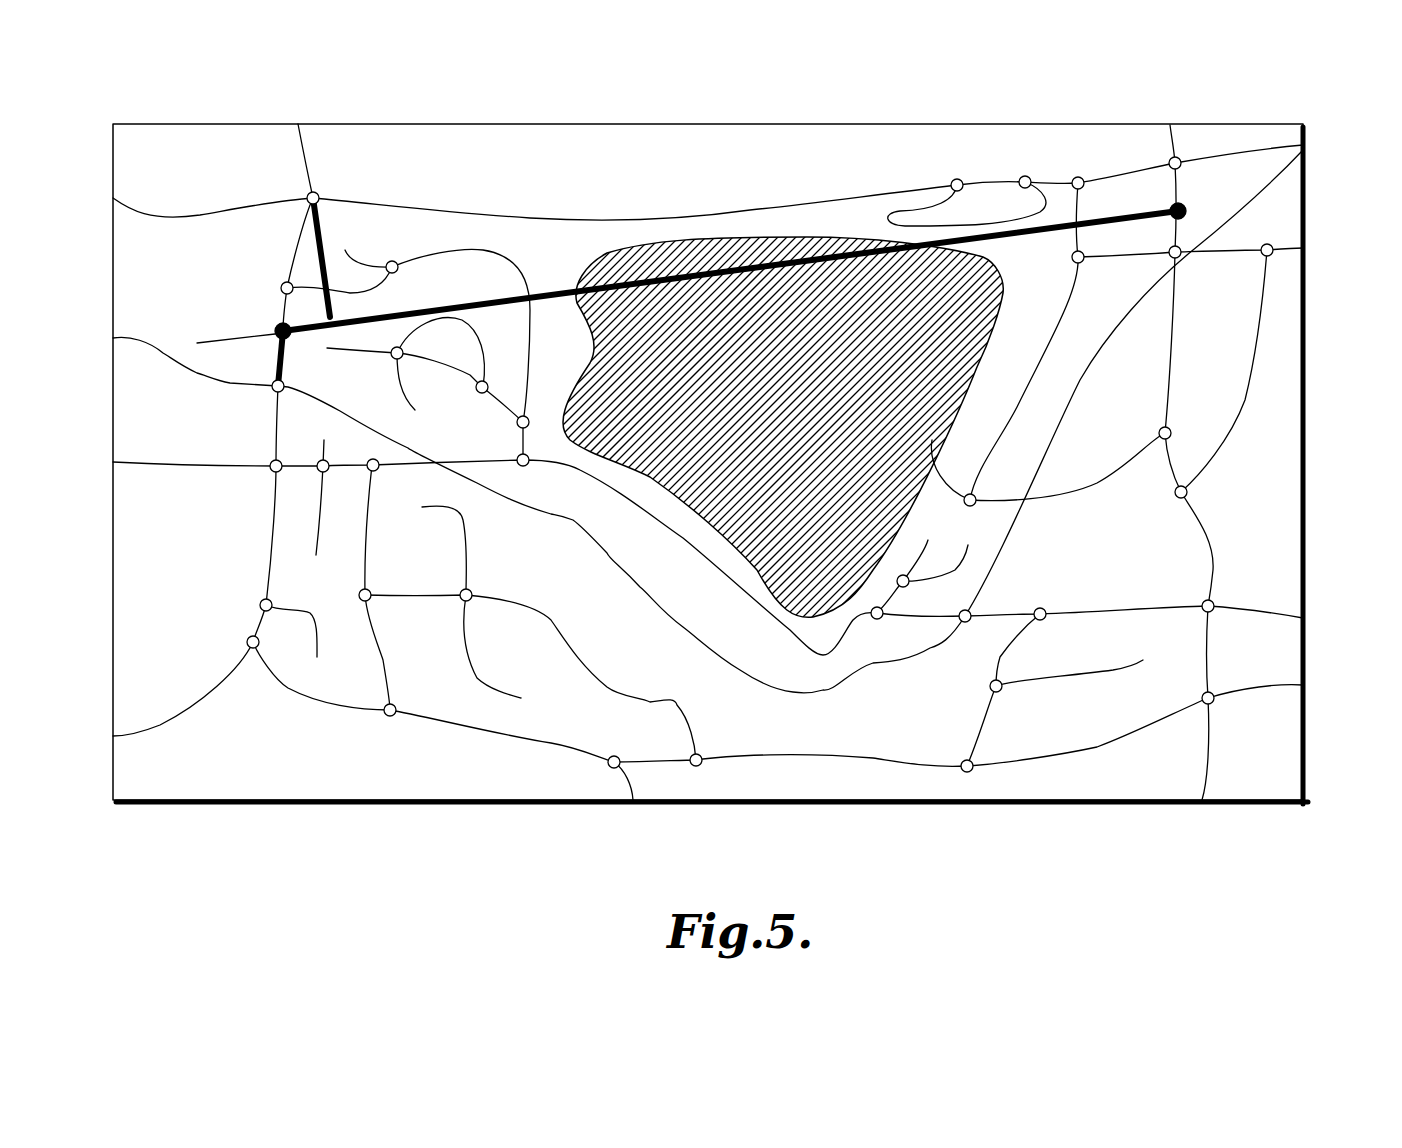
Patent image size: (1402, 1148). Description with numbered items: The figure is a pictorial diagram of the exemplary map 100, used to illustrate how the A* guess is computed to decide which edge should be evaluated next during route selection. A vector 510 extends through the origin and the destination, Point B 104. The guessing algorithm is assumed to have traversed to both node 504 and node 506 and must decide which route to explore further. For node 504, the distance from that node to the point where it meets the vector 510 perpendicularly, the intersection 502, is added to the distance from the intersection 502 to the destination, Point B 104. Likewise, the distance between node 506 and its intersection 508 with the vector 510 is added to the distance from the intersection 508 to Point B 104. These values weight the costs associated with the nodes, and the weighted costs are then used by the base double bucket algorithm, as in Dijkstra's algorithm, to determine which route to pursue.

The map 100 is at (853, 124).
The Point B 104 is at (1187, 208).
The intersection 502 is at (272, 329).
The node 504 is at (270, 388).
The node 506 is at (313, 197).
The intersection 508 is at (333, 316).
The vector 510 is at (723, 266).